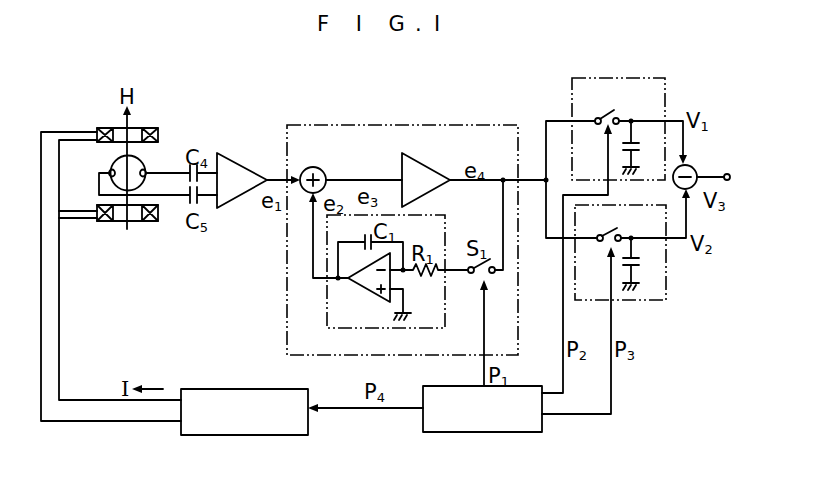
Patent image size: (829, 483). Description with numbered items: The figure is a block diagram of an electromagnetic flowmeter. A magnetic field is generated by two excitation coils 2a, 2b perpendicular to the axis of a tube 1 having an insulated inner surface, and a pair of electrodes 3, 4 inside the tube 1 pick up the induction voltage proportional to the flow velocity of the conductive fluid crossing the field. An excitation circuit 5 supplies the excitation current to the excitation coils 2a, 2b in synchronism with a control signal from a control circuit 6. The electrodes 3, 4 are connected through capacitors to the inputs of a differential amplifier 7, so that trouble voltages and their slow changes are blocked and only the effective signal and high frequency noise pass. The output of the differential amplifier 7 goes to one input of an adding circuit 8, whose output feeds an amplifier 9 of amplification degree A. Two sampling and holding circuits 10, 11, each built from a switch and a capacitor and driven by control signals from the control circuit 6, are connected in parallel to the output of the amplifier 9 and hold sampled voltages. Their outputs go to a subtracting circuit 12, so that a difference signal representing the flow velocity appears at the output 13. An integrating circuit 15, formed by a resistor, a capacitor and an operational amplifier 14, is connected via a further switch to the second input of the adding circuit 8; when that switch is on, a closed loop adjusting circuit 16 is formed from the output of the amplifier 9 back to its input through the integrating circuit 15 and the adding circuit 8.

The tube 1 is at (134, 165).
The excitation coil 2a is at (155, 128).
The excitation coil 2b is at (108, 222).
The electrode 3 is at (109, 172).
The electrode 4 is at (146, 171).
The excitation circuit 5 is at (266, 435).
The control circuit 6 is at (495, 432).
The differential amplifier 7 is at (242, 170).
The adding circuit 8 is at (319, 168).
The amplifier 9 is at (444, 155).
The sampling and holding circuit 10 is at (642, 78).
The sampling and holding circuit 11 is at (668, 286).
The subtracting circuit 12 is at (695, 168).
The output 13 is at (730, 182).
The operational amplifier 14 is at (373, 298).
The integrating circuit 15 is at (327, 306).
The closed loop adjusting circuit 16 is at (432, 125).